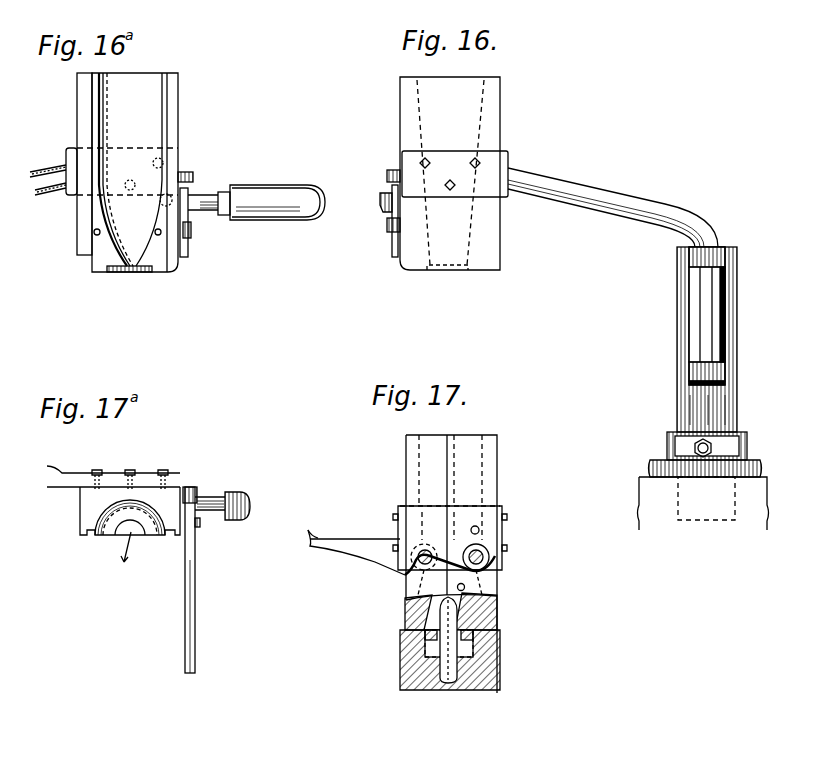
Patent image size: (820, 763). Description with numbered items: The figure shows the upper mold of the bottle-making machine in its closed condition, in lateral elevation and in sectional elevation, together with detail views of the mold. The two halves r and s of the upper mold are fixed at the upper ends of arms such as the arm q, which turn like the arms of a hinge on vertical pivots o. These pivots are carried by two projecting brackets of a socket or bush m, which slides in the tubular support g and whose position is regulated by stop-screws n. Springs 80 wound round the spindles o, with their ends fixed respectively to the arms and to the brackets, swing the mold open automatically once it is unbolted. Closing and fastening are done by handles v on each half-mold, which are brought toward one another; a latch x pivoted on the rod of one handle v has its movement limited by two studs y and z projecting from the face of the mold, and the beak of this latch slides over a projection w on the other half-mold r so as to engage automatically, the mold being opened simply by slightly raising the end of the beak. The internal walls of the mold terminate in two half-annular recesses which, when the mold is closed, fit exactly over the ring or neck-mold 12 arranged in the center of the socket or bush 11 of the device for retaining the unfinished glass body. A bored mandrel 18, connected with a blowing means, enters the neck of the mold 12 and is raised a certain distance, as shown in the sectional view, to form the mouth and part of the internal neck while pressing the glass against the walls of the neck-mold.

In FIG. 16a, the half-mold s is at (104, 172).
In FIG. 17a, the half-mold s is at (80, 516).
In FIG. 17, the half-mold s is at (452, 504).
In FIG. 16a, the stud y is at (194, 172).
In FIG. 16, the stud y is at (385, 172).
In FIG. 17a, the stud y is at (197, 498).
In FIG. 17, the stud y is at (479, 530).
In FIG. 16a, the latch x is at (187, 255).
In FIG. 16, the latch x is at (394, 257).
In FIG. 17a, the latch x is at (192, 610).
In FIG. 17, the latch x is at (326, 545).
In FIG. 16a, the handle v is at (256, 202).
In FIG. 16, the handle v is at (383, 208).
In FIG. 17a, the handle v is at (243, 518).
In FIG. 17, the handle v is at (405, 563).
In FIG. 16a, the stud z is at (192, 232).
In FIG. 16, the stud z is at (390, 230).
In FIG. 17a, the stud z is at (199, 527).
In FIG. 17, the stud z is at (464, 588).
In FIG. 16, the arm q is at (568, 195).
In FIG. 16, the spring 80 is at (715, 297).
In FIG. 16, the vertical pivot o is at (700, 350).
In FIG. 16, the socket or bush m is at (707, 410).
In FIG. 16, the tubular support g is at (665, 447).
In FIG. 16, the stop-screw n is at (702, 462).
In FIG. 17, the half-mold r is at (451, 564).
In FIG. 17, the projection w is at (400, 540).
In FIG. 17, the ring or neck-mold 12 is at (500, 643).
In FIG. 17, the socket or bush 11 is at (410, 675).
In FIG. 17, the mandrel 18 is at (452, 685).